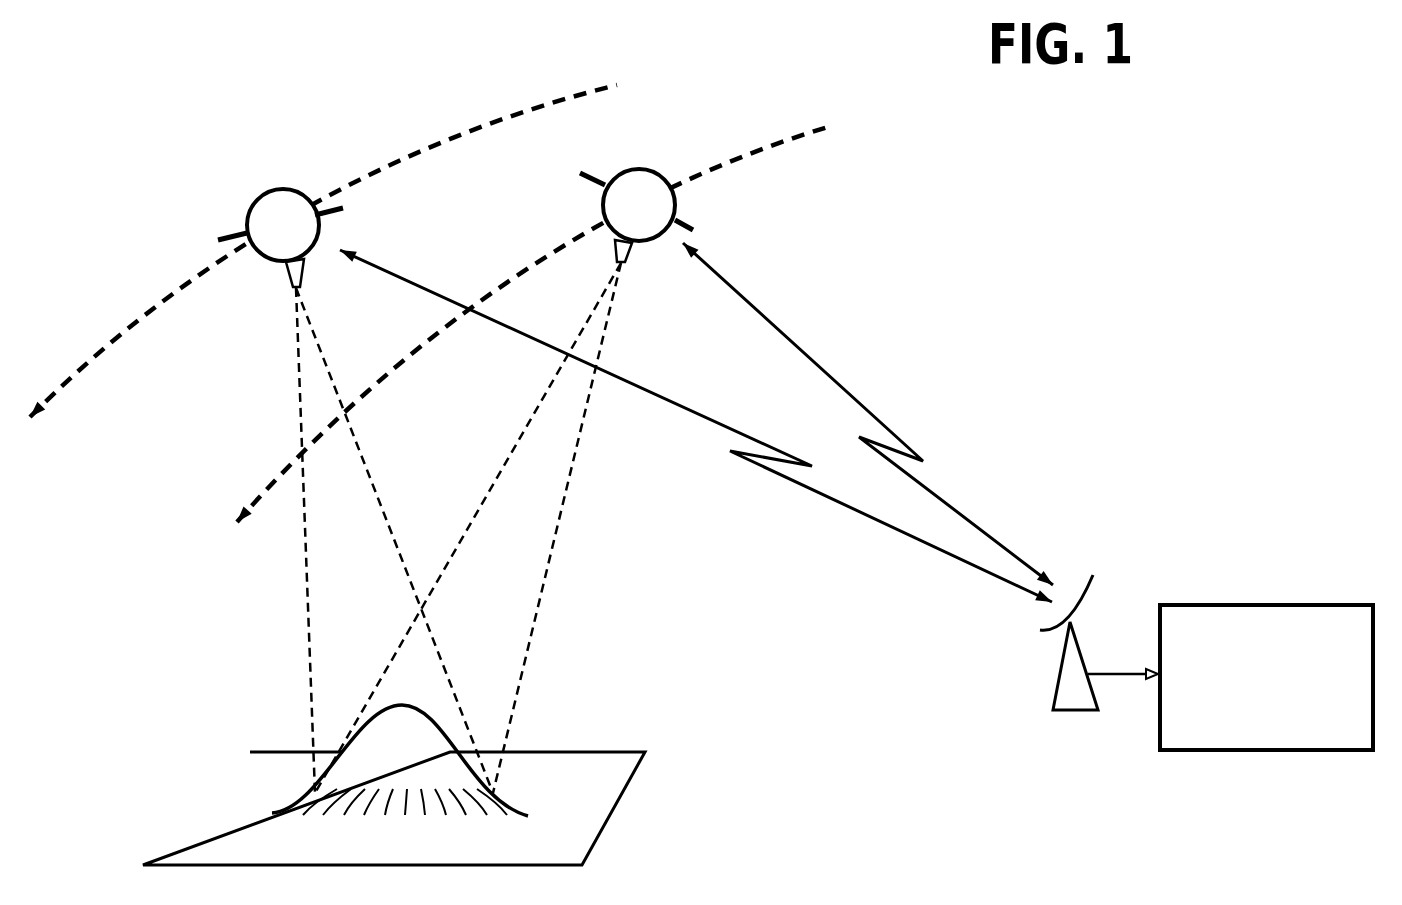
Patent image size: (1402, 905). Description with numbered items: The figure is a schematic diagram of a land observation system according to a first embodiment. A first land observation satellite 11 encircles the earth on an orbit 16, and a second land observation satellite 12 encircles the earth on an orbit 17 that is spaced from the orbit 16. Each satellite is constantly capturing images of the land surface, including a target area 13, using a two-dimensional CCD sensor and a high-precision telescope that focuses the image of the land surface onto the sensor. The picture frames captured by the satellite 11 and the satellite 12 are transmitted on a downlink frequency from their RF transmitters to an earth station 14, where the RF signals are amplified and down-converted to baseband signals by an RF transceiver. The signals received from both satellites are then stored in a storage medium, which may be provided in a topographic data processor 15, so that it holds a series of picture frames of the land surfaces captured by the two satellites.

The first land observation satellite 11 is at (297, 188).
The second land observation satellite 12 is at (622, 168).
The target area 13 is at (598, 752).
The earth station 14 is at (1073, 710).
The topographic data processor 15 is at (1257, 605).
The orbit 16 is at (483, 127).
The orbit 17 is at (777, 140).